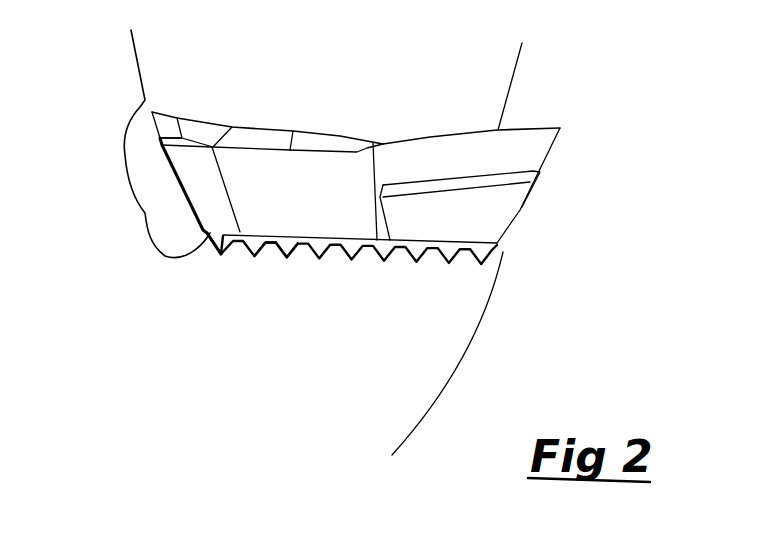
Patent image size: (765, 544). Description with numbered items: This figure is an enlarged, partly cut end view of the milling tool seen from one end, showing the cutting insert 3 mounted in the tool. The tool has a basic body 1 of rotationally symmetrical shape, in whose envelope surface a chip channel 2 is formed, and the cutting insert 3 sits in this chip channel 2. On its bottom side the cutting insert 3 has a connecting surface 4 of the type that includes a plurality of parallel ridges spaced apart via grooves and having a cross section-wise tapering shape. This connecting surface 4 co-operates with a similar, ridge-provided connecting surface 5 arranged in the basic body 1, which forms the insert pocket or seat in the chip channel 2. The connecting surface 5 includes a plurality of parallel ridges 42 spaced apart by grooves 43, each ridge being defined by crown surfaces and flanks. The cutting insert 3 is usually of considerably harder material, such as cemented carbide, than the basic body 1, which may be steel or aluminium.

The basic body 1 is at (420, 400).
The chip channel 2 is at (157, 73).
The cutting insert 3 is at (405, 135).
The connecting surface 4 is at (419, 260).
The ridges 42 is at (270, 250).
The grooves 43 is at (287, 253).
The connecting surface 5 is at (223, 240).